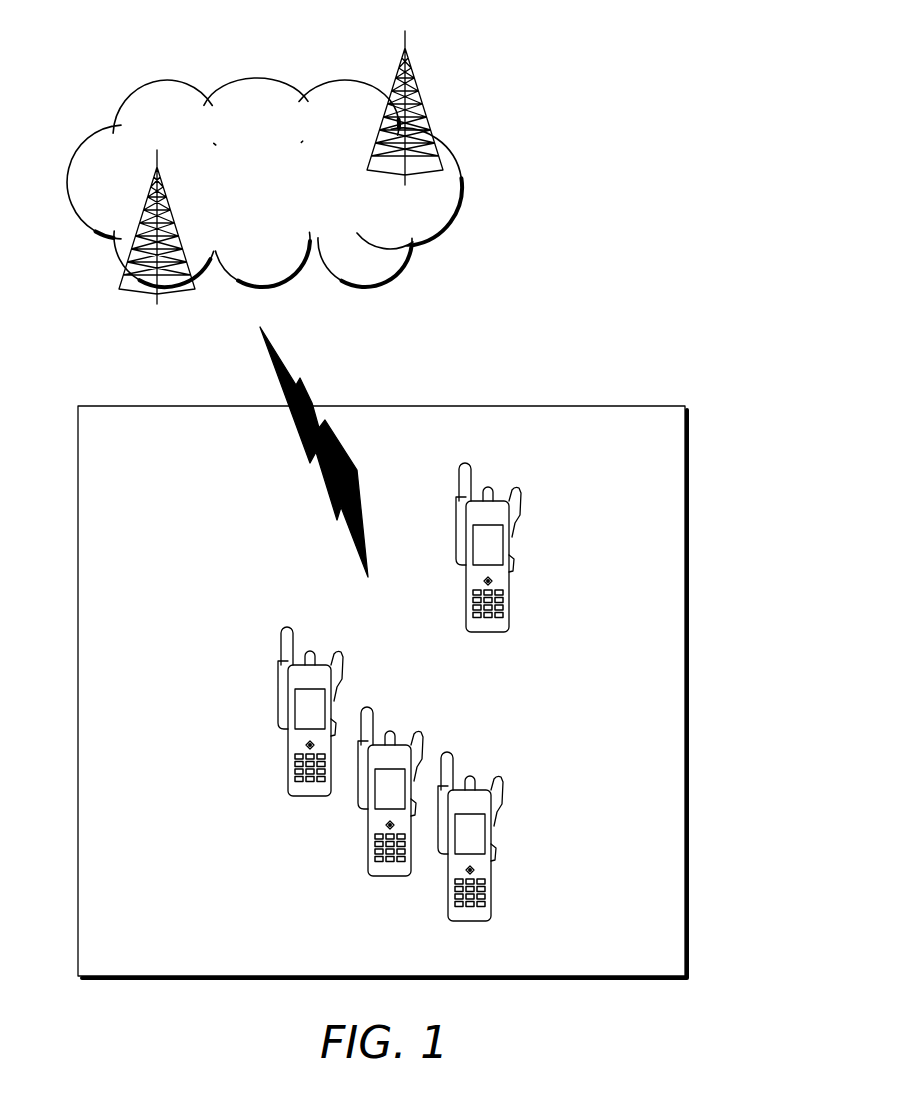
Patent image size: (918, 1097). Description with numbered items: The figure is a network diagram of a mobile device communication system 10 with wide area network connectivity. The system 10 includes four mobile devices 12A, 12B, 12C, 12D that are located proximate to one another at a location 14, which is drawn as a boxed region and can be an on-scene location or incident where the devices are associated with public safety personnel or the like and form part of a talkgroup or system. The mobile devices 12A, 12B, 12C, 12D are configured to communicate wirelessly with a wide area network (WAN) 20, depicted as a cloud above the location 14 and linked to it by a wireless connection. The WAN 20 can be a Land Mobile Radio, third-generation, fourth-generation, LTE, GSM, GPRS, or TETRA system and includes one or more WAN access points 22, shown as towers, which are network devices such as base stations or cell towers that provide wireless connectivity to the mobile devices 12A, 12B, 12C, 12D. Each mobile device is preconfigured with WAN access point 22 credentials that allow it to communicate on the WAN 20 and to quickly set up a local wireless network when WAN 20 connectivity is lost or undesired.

The mobile device communication system 10 is at (601, 24).
The mobile device 12A is at (510, 588).
The mobile device 12B is at (285, 758).
The mobile device 12C is at (365, 837).
The mobile device 12D is at (445, 881).
The location 14 is at (611, 406).
The wide area network (WAN) 20 is at (291, 81).
The WAN access point 22 is at (423, 108).